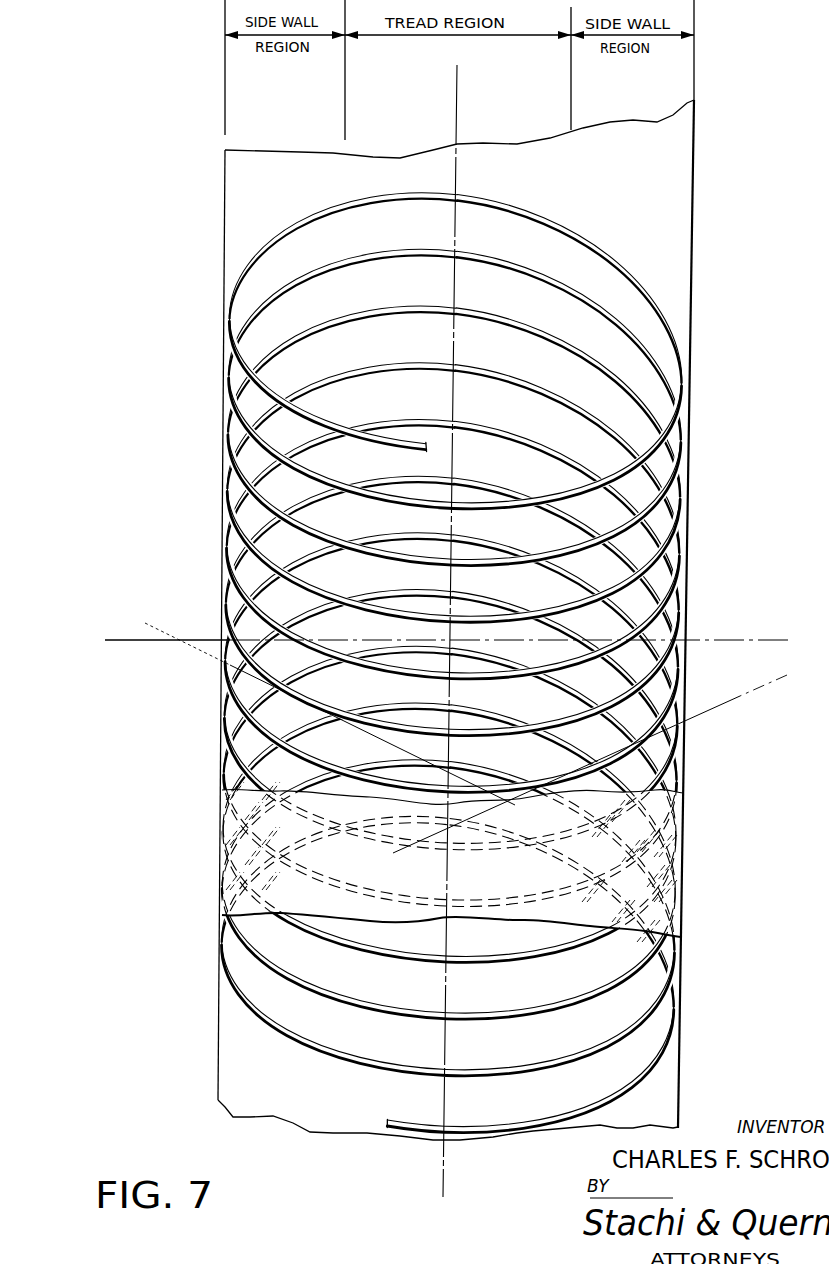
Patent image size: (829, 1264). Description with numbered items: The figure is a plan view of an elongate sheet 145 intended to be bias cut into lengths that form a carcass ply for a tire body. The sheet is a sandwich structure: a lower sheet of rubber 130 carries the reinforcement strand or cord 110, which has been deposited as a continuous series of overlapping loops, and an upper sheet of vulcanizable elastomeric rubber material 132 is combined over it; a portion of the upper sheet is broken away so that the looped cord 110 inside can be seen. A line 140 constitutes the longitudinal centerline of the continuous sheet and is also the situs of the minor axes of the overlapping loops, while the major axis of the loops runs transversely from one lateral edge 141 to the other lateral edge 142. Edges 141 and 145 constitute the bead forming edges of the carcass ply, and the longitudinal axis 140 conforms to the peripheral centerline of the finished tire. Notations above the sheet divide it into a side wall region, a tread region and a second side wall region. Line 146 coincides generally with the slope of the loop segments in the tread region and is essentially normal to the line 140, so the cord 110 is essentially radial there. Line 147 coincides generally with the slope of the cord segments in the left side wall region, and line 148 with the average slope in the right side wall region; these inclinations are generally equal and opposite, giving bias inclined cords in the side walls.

The strand or cord 110 is at (247, 410).
The lower sheet of rubber 130 is at (673, 240).
The upper sheet of vulcanizable elastomeric rubber material 132 is at (682, 850).
The longitudinal centerline 140 is at (458, 113).
The lateral edge 141 is at (222, 578).
The lateral edge 142 is at (684, 755).
The elongate sheet 145 is at (694, 937).
The line 146 is at (128, 640).
The line 147 is at (212, 662).
The line 148 is at (767, 685).